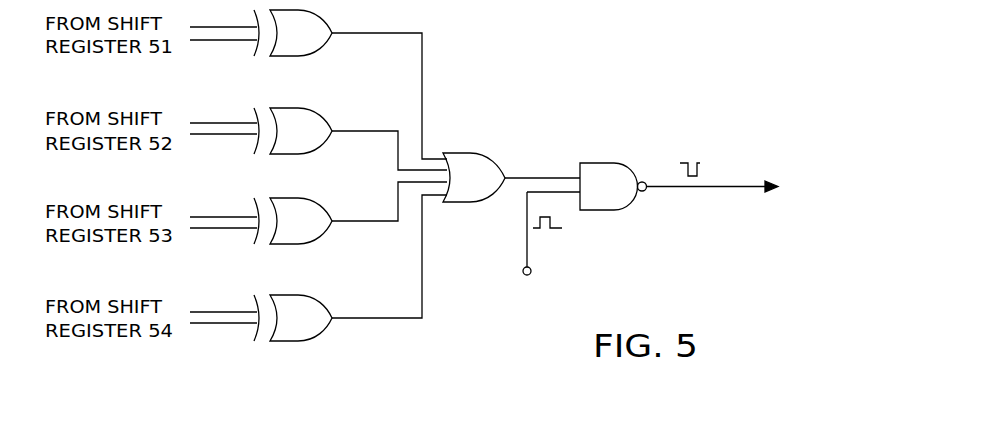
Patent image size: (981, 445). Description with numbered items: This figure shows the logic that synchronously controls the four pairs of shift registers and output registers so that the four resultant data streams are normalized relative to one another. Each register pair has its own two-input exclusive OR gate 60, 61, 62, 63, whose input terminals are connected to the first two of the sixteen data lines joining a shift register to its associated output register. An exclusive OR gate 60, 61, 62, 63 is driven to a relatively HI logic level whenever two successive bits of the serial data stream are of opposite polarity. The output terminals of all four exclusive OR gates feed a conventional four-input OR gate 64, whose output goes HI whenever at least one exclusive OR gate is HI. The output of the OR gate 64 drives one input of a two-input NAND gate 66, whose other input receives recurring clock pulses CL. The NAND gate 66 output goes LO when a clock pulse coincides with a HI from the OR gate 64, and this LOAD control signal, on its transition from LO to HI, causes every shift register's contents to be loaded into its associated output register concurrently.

The exclusive OR gate 60 is at (303, 57).
The exclusive OR gate 61 is at (302, 155).
The exclusive OR gate 62 is at (308, 245).
The exclusive OR gate 63 is at (308, 342).
The OR gate 64 is at (460, 152).
The NAND gate 66 is at (602, 163).